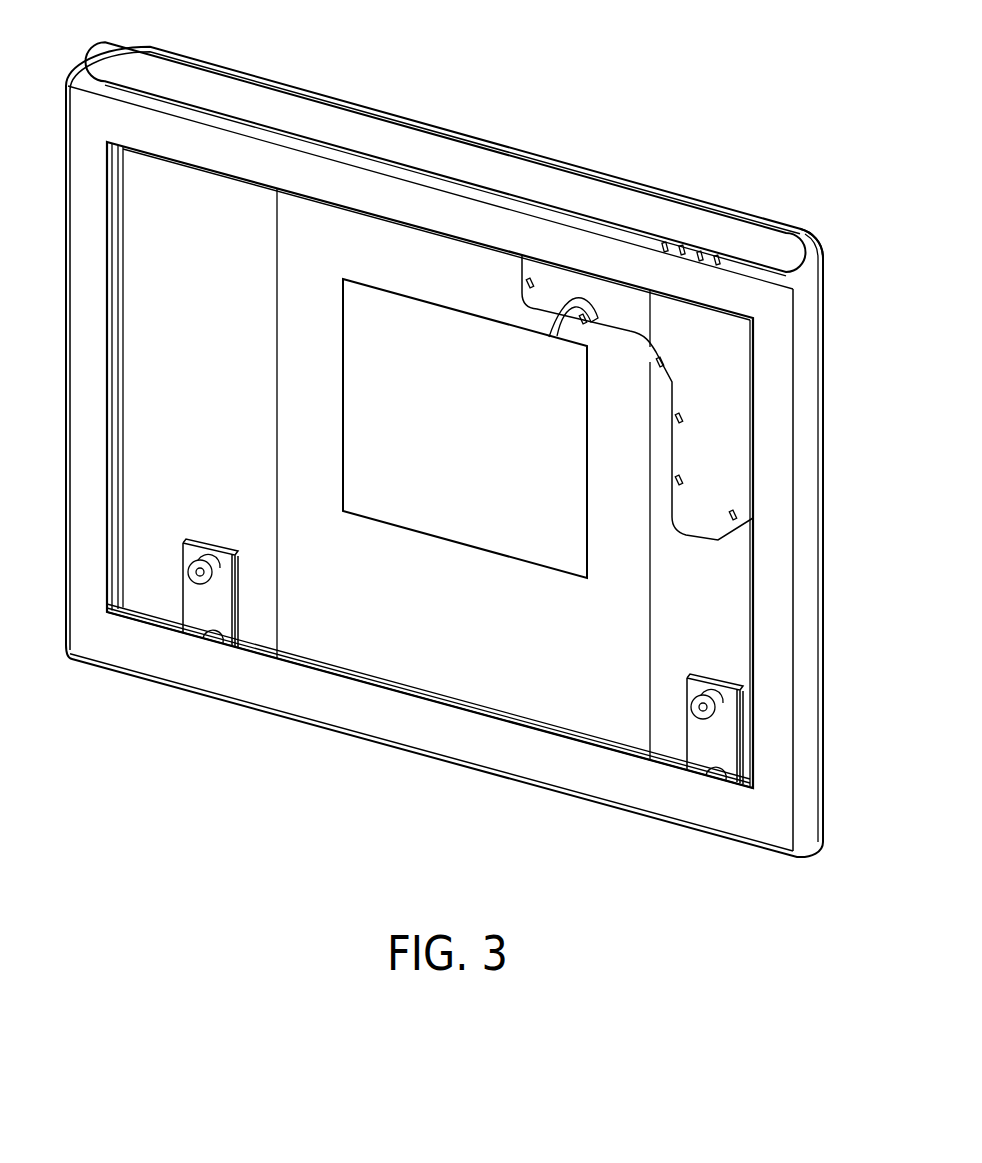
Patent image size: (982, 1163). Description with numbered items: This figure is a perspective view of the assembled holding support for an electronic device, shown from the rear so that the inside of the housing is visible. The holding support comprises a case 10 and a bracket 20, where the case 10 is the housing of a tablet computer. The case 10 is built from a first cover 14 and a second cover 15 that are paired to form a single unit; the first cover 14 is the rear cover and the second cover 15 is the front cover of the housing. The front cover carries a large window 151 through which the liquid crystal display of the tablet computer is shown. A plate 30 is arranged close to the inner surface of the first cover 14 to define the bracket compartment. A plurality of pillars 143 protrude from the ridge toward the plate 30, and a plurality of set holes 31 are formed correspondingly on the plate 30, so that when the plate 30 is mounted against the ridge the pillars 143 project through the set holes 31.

The case 10 is at (430, 51).
The first cover 14 is at (433, 125).
The second cover 15 is at (215, 675).
The window 151 is at (432, 697).
The bracket 20 is at (825, 240).
The plate 30 is at (695, 338).
The set holes 31 is at (548, 330).
The pillars 143 is at (572, 342).